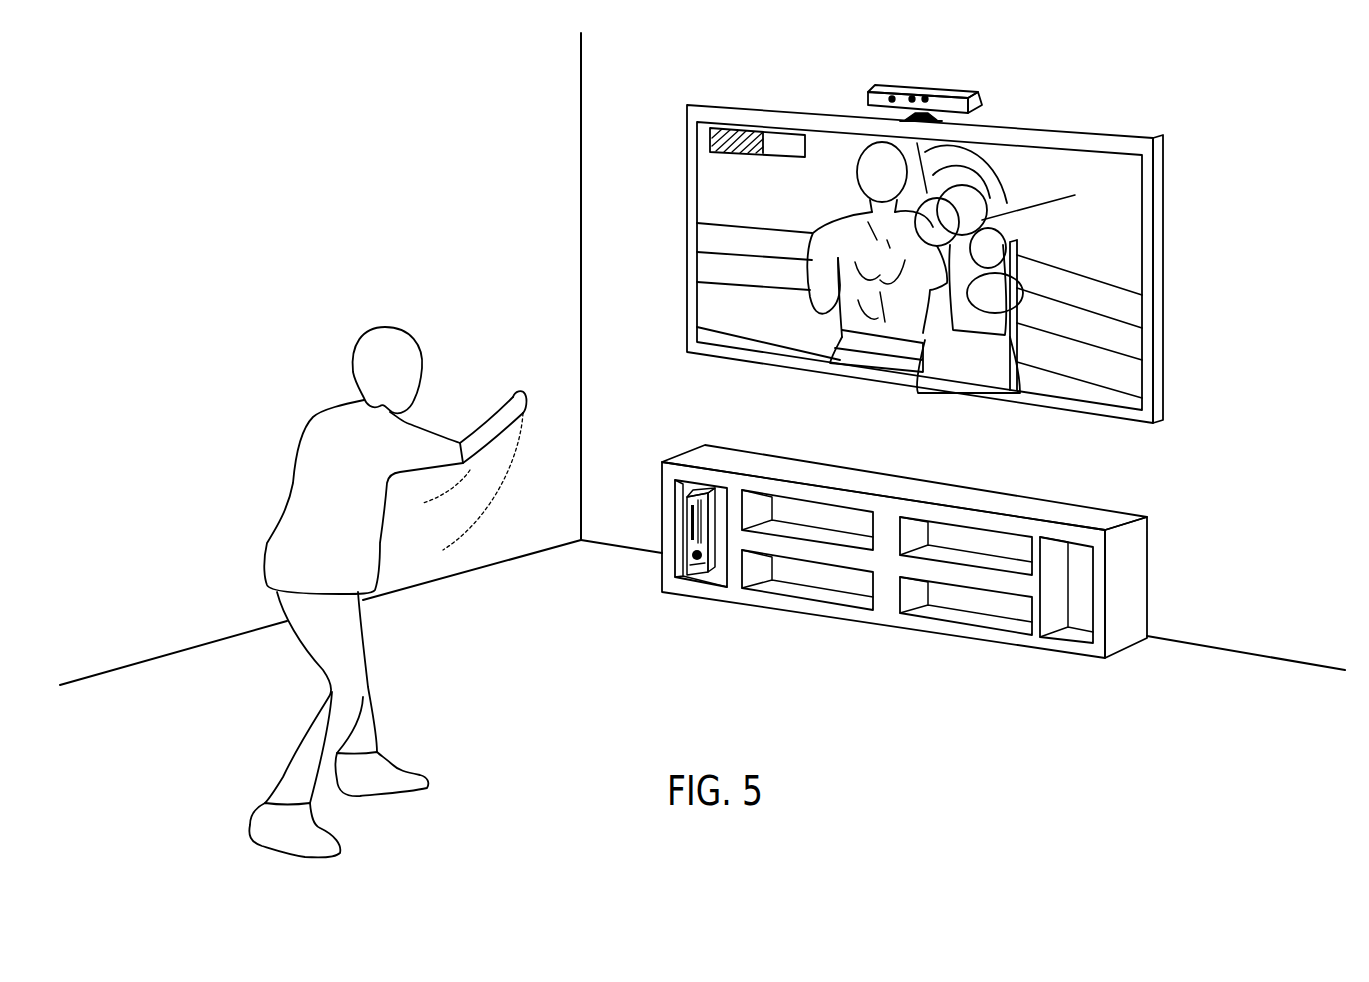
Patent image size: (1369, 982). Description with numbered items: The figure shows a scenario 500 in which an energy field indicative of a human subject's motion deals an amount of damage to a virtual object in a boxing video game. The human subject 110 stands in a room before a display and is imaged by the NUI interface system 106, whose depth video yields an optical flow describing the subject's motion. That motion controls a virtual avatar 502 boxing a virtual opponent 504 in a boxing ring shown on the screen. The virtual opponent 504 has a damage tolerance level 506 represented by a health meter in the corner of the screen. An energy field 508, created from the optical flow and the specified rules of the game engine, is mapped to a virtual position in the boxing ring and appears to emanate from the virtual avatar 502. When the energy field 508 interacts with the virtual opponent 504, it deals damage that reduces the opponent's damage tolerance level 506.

The scenario 500 is at (410, 115).
The human subject 110 is at (352, 530).
The NUI interface system 106 is at (973, 90).
The virtual avatar 502 is at (813, 230).
The virtual opponent 504 is at (1003, 233).
The damage tolerance level 506 is at (743, 154).
The energy field 508 is at (1006, 168).